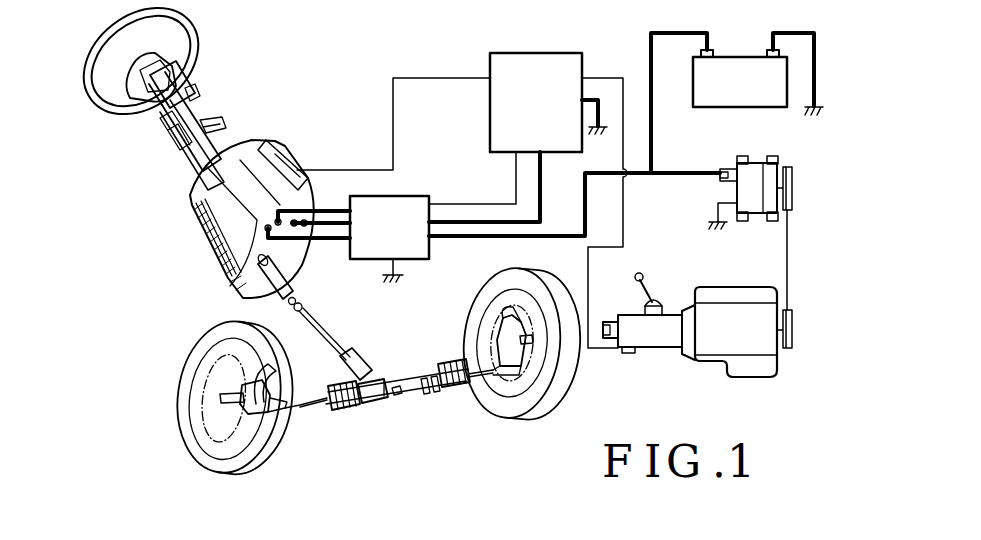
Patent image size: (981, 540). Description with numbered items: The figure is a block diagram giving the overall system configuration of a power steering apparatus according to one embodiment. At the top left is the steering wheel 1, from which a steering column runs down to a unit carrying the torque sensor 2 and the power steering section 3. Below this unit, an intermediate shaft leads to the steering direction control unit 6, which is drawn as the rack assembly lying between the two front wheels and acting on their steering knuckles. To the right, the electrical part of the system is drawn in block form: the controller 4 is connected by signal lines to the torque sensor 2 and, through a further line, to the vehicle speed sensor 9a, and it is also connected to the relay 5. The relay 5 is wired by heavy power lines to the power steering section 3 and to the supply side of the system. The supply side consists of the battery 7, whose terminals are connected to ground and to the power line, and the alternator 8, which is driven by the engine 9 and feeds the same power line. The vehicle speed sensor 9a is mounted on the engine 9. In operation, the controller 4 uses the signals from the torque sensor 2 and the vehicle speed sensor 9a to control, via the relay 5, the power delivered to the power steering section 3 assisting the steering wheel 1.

The steering wheel 1 is at (188, 27).
The torque sensor 2 is at (283, 159).
The power steering section 3 is at (203, 242).
The controller 4 is at (555, 53).
The relay 5 is at (405, 196).
The steering direction control unit 6 is at (370, 364).
The battery 7 is at (740, 57).
The alternator 8 is at (752, 158).
The engine 9 is at (716, 378).
The vehicle speed sensor 9a is at (628, 355).